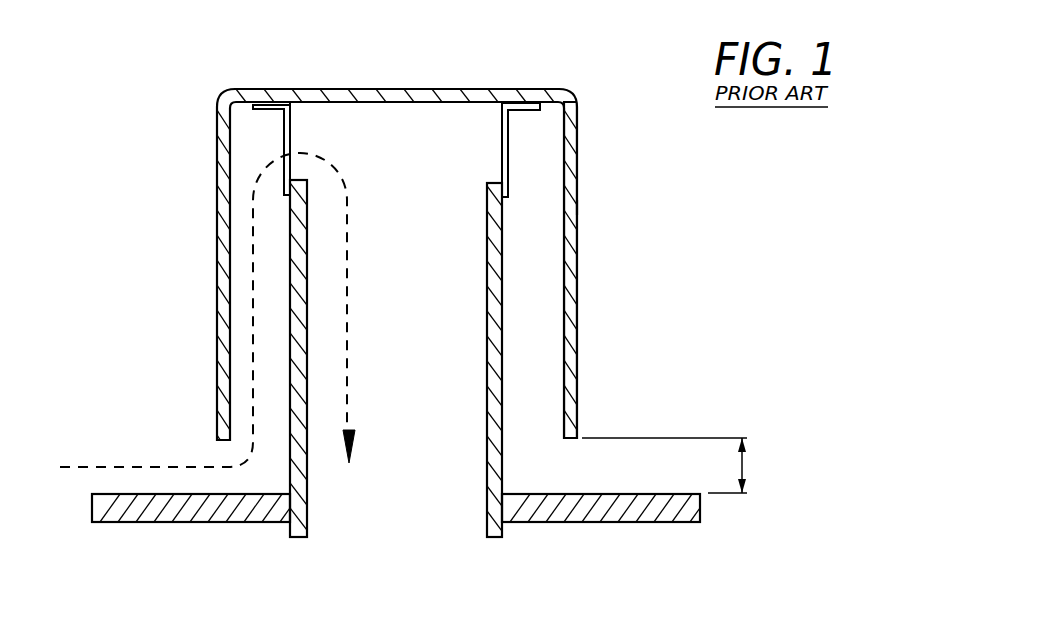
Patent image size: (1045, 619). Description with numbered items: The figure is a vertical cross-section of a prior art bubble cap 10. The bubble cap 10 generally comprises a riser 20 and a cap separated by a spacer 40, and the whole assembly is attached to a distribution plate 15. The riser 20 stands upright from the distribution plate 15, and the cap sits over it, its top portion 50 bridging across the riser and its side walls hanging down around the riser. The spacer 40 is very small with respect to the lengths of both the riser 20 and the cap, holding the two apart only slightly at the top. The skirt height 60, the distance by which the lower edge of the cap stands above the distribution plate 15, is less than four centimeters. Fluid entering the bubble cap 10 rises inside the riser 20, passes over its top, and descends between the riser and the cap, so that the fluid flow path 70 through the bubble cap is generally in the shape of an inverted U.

The bubble cap 10 is at (180, 79).
The distribution plate 15 is at (654, 527).
The riser 20 is at (478, 512).
The spacer 40 is at (512, 138).
The shield top cover 50 is at (397, 253).
The skirt height 60 is at (742, 463).
The fluid flow path 70 is at (110, 463).